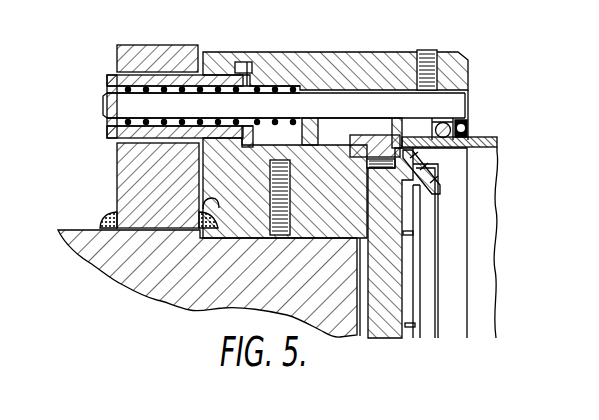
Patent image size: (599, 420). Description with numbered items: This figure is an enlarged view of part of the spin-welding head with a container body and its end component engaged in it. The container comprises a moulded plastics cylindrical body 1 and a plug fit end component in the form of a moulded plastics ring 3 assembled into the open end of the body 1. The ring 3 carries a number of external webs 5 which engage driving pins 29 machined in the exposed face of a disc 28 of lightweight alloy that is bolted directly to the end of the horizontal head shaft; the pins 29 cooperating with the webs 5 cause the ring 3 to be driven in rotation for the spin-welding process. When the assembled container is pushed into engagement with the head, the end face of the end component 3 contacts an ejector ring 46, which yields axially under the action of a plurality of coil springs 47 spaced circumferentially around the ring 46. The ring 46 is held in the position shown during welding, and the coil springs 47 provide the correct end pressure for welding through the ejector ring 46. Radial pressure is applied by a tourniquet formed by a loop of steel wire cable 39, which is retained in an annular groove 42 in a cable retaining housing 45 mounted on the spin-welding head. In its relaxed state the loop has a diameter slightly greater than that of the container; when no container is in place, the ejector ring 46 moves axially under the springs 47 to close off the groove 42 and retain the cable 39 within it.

The coil springs 47 is at (158, 88).
The ejector ring 46 is at (368, 147).
The cable retaining housing 45 is at (459, 58).
The steel wire cable 39 is at (439, 122).
The annular groove 42 is at (457, 119).
The cylindrical body 1 is at (472, 136).
The ring 3 is at (438, 202).
The driving pins 29 is at (402, 183).
The external webs 5 is at (418, 234).
The disc 28 is at (393, 324).